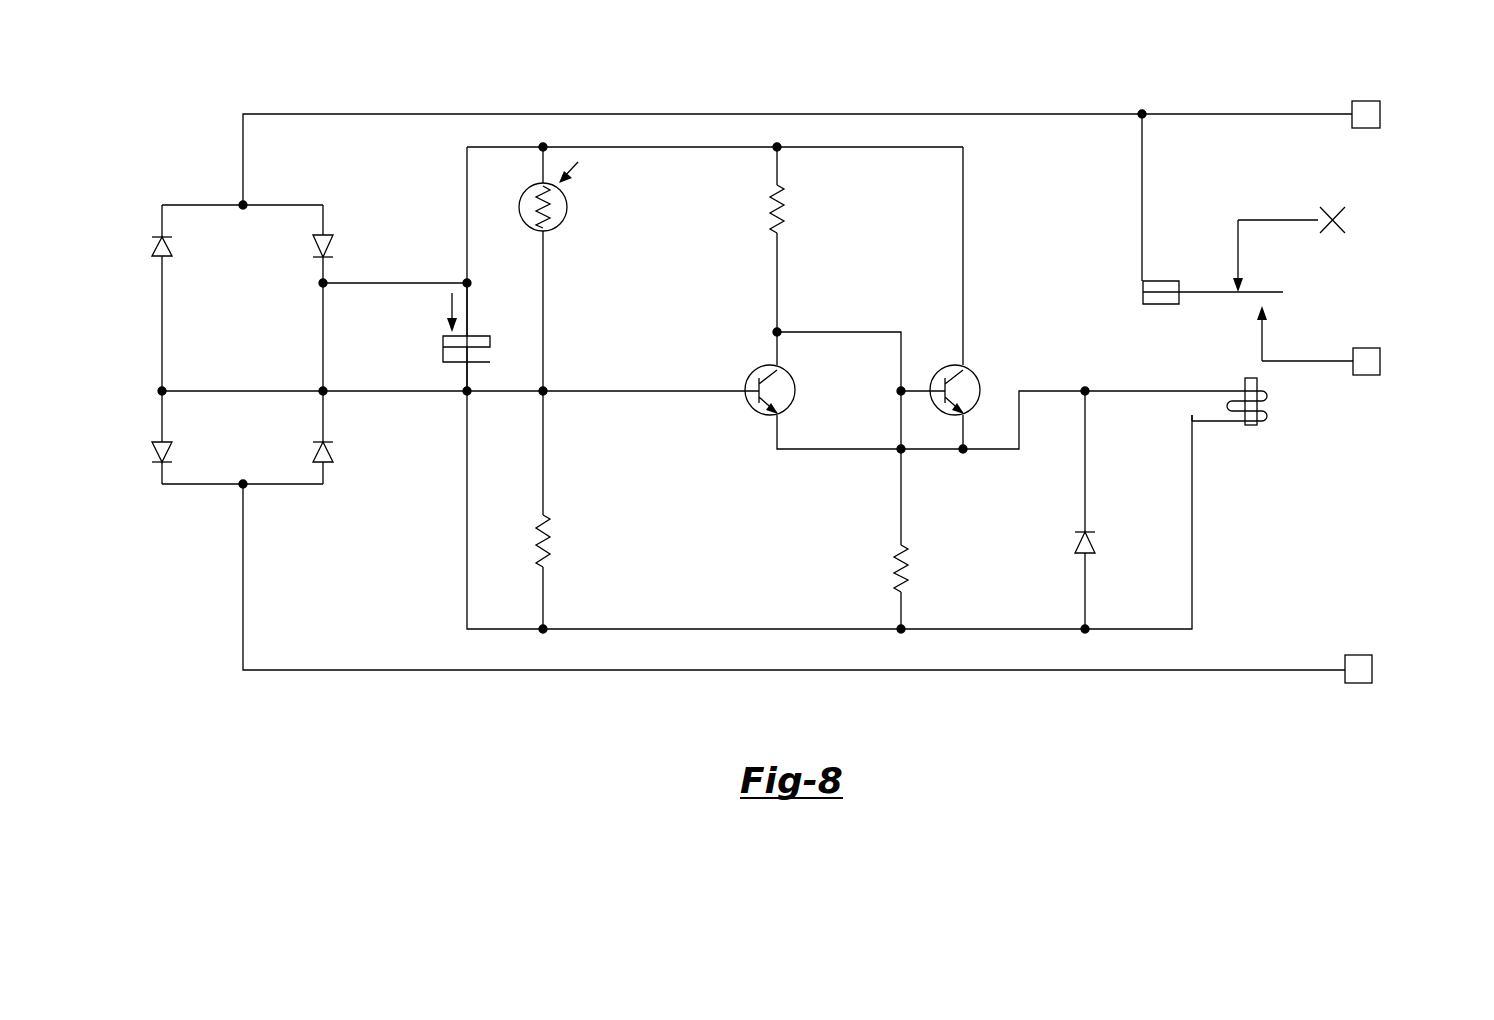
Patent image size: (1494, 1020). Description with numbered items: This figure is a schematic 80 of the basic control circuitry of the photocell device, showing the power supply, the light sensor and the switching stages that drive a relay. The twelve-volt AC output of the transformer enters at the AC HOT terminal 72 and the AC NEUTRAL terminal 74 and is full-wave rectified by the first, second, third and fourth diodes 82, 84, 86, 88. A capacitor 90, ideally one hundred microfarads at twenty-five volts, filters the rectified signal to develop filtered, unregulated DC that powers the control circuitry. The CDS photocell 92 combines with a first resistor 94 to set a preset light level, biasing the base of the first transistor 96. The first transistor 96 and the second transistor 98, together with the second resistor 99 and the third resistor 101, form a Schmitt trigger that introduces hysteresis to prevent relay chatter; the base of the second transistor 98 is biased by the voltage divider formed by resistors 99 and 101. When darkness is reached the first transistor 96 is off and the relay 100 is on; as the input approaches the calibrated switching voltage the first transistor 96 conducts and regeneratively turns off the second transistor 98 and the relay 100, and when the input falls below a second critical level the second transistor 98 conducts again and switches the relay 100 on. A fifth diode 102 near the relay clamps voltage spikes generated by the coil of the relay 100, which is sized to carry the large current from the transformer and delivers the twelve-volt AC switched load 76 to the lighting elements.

The control circuitry schematic 80 is at (636, 70).
The first diode 82 is at (150, 240).
The second diode 84 is at (150, 462).
The third diode 86 is at (334, 233).
The fourth diode 88 is at (336, 462).
The capacitor 90 is at (408, 340).
The CDS photocell PC1 92 is at (562, 232).
The first resistor 94 is at (595, 528).
The first transistor Q1 96 is at (756, 366).
The second transistor Q2 98 is at (938, 366).
The second resistor 99 is at (894, 571).
The relay 100 is at (1245, 378).
The third resistor 101 is at (845, 195).
The fifth diode 102 is at (1079, 531).
The AC HOT terminal 72 is at (1366, 100).
The AC NEUTRAL terminal 74 is at (1358, 655).
The AC SWITCHED load 76 is at (1366, 348).